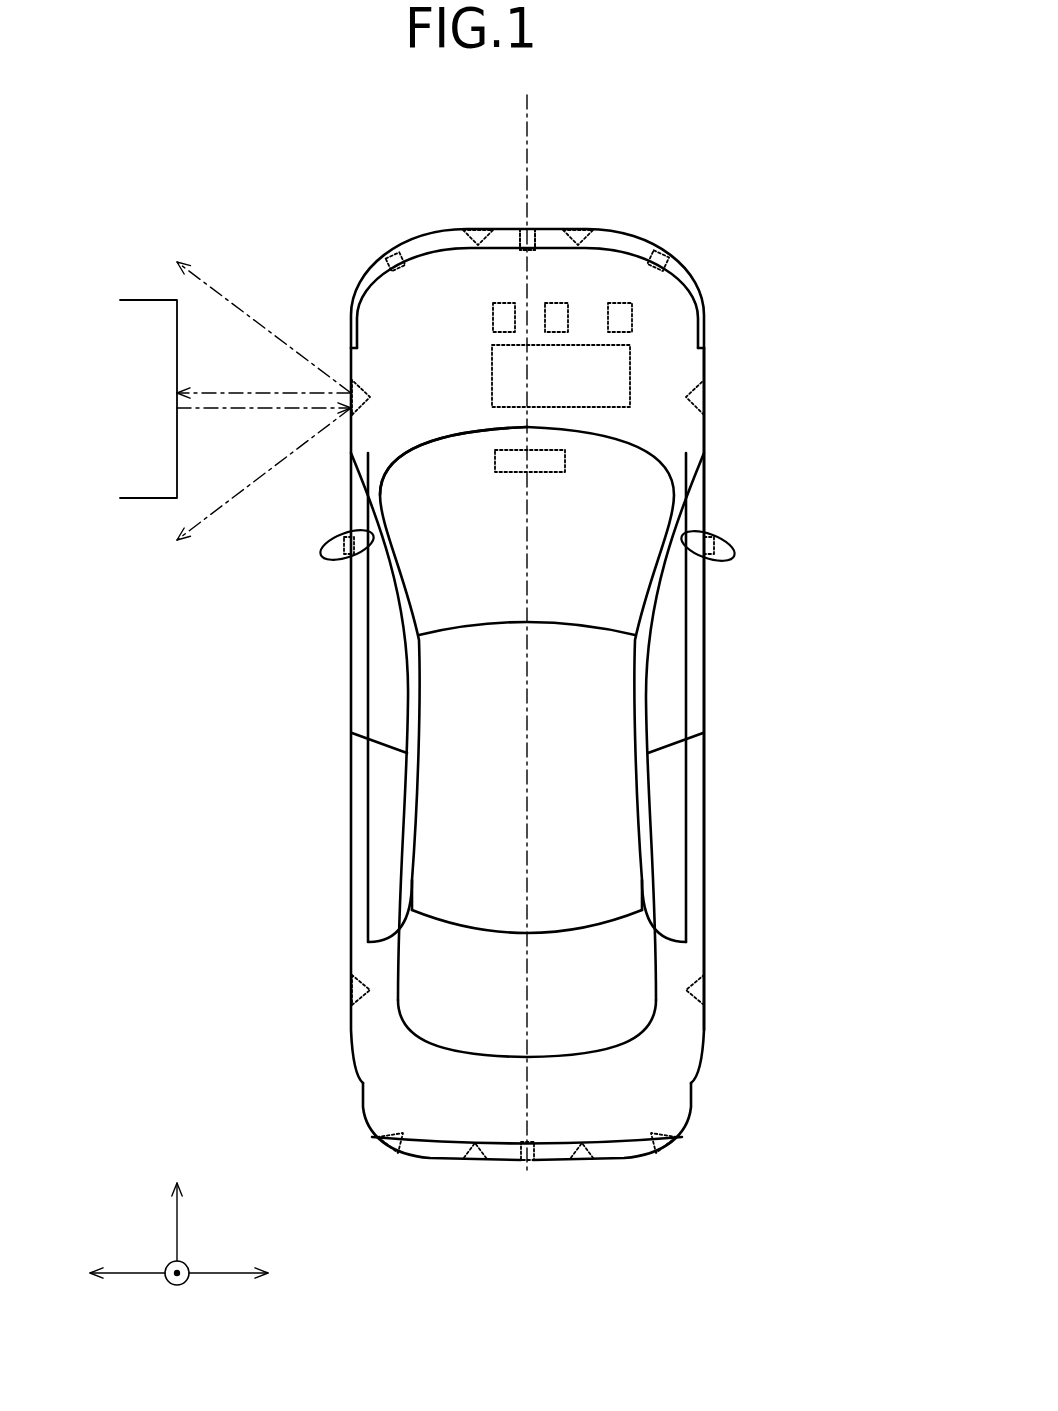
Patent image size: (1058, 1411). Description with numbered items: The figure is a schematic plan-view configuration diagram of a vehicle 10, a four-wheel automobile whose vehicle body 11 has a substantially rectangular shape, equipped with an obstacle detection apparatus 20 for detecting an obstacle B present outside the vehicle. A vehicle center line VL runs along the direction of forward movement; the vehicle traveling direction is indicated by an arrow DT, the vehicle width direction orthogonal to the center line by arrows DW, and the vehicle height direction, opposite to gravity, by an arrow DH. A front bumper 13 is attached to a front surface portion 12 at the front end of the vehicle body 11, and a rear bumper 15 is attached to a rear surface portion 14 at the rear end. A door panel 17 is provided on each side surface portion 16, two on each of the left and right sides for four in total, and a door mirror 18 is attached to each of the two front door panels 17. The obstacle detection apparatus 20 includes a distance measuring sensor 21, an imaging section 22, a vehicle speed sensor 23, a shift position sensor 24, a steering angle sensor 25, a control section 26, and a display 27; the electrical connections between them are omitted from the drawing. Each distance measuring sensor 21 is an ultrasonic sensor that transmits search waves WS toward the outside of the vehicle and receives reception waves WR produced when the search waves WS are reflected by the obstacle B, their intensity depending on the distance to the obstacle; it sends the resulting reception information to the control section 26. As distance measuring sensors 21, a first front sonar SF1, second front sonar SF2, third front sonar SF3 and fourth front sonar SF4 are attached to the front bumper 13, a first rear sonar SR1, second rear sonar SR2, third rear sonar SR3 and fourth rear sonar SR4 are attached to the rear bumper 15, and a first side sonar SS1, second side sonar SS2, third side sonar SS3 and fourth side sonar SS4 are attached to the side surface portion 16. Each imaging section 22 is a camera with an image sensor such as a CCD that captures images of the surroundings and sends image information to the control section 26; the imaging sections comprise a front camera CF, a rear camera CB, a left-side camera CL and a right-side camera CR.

The vehicle 10 is at (853, 152).
The vehicle body 11 is at (707, 338).
The front surface portion 12 is at (617, 230).
The front bumper 13 is at (640, 242).
The rear surface portion 14 is at (618, 1140).
The rear bumper 15 is at (688, 1120).
The side surface portion 16 is at (706, 950).
The door panel 17 is at (357, 648).
The door mirror 18 is at (322, 548).
The obstacle detection apparatus 20 is at (437, 328).
The distance measuring sensor 21 is at (730, 385).
The imaging section 22 is at (514, 214).
The vehicle speed sensor 23 is at (632, 312).
The shift position sensor 24 is at (553, 303).
The steering angle sensor 25 is at (493, 306).
The control section 26 is at (630, 400).
The display 27 is at (495, 460).
The first front sonar SF1 is at (382, 238).
The second front sonar SF2 is at (668, 258).
The third front sonar SF3 is at (472, 222).
The fourth front sonar SF4 is at (588, 222).
The front camera CF is at (537, 213).
The first rear sonar SR1 is at (387, 1152).
The second rear sonar SR2 is at (666, 1152).
The third rear sonar SR3 is at (476, 1162).
The fourth rear sonar SR4 is at (581, 1162).
The rear camera CB is at (526, 1165).
The first side sonar SS1 is at (352, 392).
The second side sonar SS2 is at (706, 400).
The third side sonar SS3 is at (350, 991).
The fourth side sonar SS4 is at (706, 991).
The left-side camera CL is at (344, 562).
The right-side camera CR is at (713, 536).
The vehicle center line VL is at (535, 815).
The obstacle B is at (150, 312).
The search waves WS is at (266, 327).
The reception waves WR is at (267, 410).
The arrow indicating vehicle traveling direction DT is at (177, 1207).
The arrows indicating vehicle width direction DW is at (178, 1273).
The arrow indicating vehicle height direction DH is at (177, 1289).